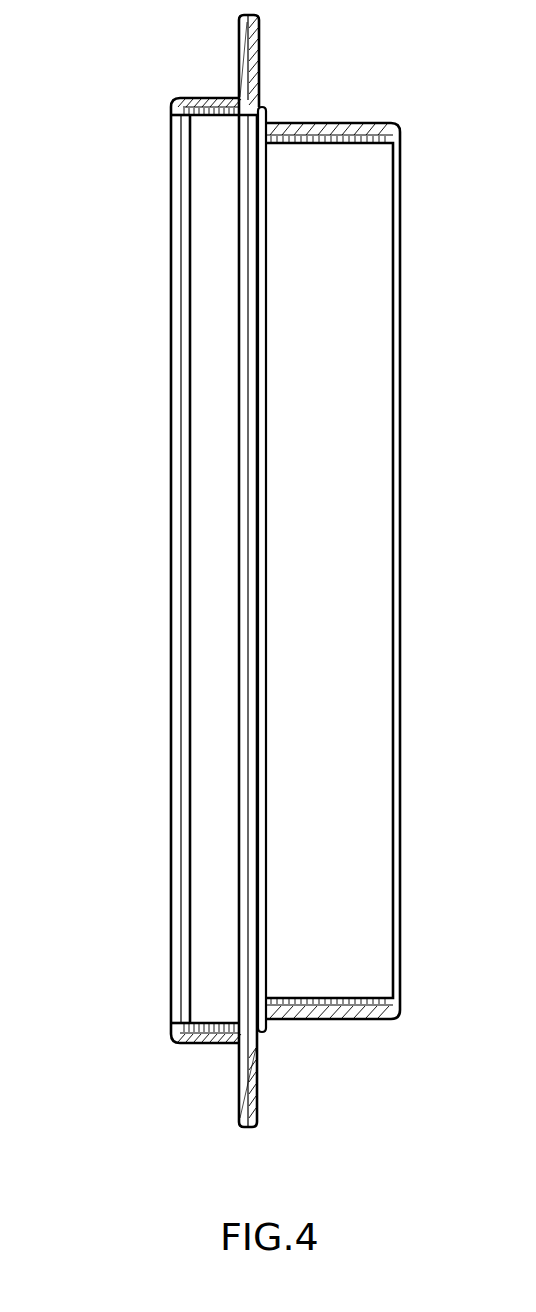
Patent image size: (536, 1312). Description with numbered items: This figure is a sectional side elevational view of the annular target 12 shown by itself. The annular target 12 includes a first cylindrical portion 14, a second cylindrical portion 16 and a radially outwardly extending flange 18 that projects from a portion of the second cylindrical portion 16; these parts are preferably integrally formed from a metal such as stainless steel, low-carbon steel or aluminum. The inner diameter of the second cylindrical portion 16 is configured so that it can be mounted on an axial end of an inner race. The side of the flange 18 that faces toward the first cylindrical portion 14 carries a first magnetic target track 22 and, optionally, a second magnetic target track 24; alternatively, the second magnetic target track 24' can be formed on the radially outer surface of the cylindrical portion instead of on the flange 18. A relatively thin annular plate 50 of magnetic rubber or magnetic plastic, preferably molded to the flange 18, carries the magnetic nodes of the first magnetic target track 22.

The annular target 12 is at (152, 498).
The first cylindrical portion 14 is at (368, 138).
The second cylindrical portion 16 is at (205, 99).
The radially outwardly extending flange 18 is at (241, 47).
The first magnetic target track 22 is at (260, 32).
The second magnetic target track 24 is at (315, 549).
The second magnetic target track 24' is at (360, 118).
The annular plate 50 is at (250, 63).